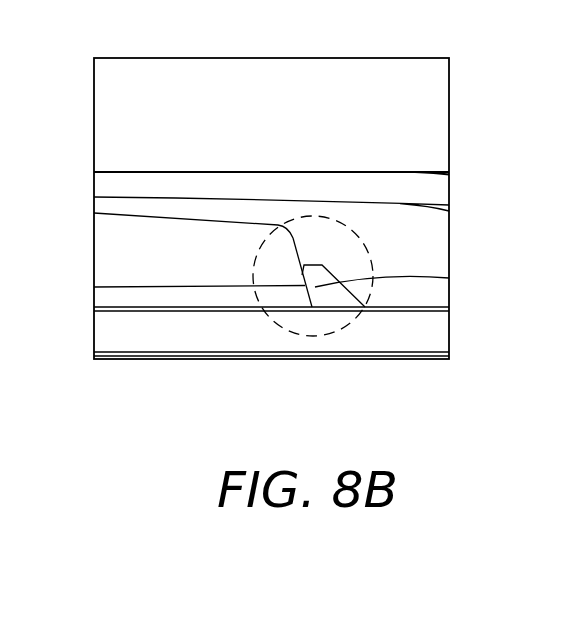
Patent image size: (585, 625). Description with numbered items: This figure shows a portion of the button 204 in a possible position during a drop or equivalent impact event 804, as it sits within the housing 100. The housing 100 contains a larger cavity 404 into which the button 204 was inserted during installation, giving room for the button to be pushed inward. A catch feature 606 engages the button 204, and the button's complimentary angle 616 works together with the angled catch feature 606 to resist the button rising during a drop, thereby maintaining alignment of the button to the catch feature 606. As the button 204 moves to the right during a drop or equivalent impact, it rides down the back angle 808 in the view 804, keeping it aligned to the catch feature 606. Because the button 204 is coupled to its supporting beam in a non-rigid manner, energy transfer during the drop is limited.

The housing 100 is at (449, 335).
The button 204 is at (110, 239).
The cavity 404 is at (433, 243).
The catch feature 606 is at (449, 278).
The complimentary angle 616 is at (302, 268).
The back angle 808 is at (311, 342).
The impact event view 804 is at (463, 410).